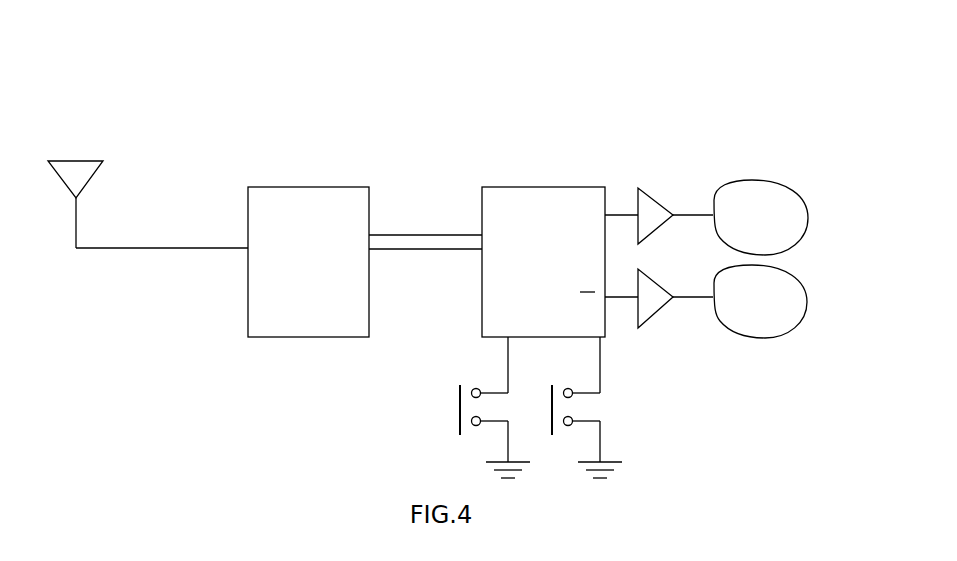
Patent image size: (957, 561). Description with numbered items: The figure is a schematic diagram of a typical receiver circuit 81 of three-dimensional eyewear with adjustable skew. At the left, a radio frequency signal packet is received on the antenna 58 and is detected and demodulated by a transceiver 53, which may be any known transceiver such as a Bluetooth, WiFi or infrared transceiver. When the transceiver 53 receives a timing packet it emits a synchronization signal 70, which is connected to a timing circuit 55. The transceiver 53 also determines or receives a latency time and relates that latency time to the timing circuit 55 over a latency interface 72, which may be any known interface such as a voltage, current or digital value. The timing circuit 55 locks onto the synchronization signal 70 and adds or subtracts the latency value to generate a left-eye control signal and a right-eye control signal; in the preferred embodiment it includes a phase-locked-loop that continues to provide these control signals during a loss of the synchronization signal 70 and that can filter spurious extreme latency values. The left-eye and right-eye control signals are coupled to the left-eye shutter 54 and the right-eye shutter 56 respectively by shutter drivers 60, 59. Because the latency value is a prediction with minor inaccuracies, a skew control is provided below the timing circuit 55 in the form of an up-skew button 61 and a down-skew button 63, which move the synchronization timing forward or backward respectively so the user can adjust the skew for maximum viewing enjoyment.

The receiver circuit 81 is at (836, 85).
The antenna 58 is at (78, 209).
The transceiver 53 is at (307, 230).
The latency interface 72 is at (410, 234).
The synchronization signal 70 is at (430, 250).
The timing circuit 55 is at (528, 208).
The shutter driver 60 is at (648, 197).
The shutter driver 59 is at (657, 308).
The left-eye shutter 54 is at (783, 196).
The right-eye shutter 56 is at (780, 317).
The up-skew button 61 is at (458, 411).
The down-skew button 63 is at (550, 411).